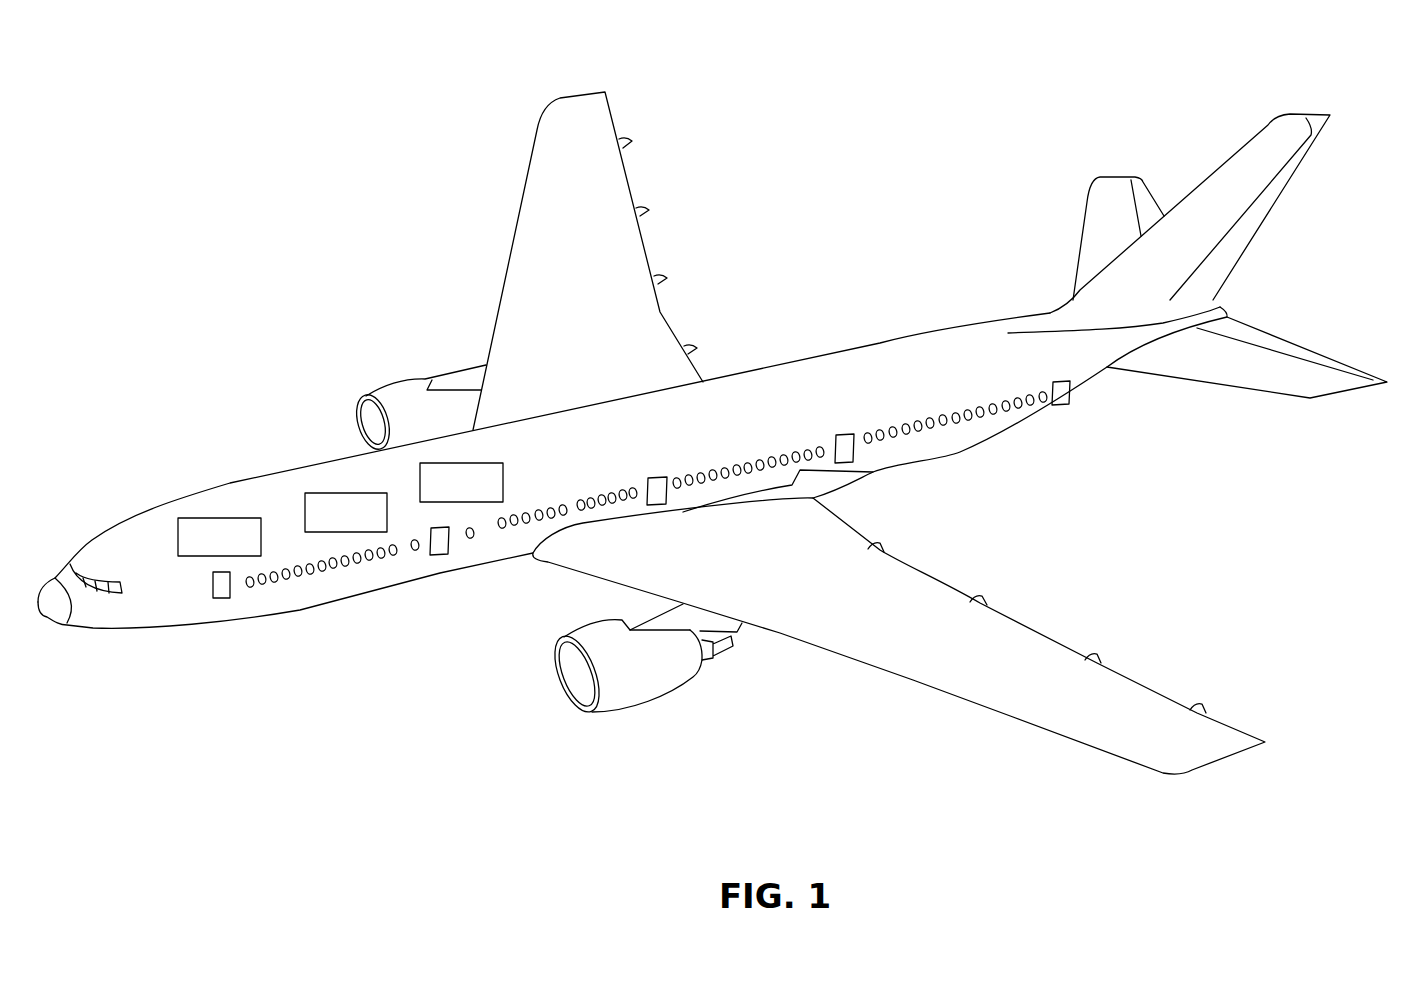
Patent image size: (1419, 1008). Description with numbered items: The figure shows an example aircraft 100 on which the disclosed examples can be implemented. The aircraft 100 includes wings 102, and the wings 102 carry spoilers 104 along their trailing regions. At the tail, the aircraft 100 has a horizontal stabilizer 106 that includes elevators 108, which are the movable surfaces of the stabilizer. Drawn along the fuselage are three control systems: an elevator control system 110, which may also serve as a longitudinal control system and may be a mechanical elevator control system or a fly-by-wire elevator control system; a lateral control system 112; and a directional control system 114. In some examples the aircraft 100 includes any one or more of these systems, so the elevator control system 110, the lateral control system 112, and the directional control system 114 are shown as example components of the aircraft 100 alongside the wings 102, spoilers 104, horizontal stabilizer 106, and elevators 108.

The aircraft 100 is at (396, 143).
The wings 102 is at (547, 150).
The spoilers 104 is at (630, 243).
The horizontal stabilizer 106 is at (1100, 207).
The elevators 108 is at (1145, 198).
The elevator control system 110 is at (221, 517).
The lateral control system 112 is at (323, 493).
The directional control system 114 is at (462, 463).